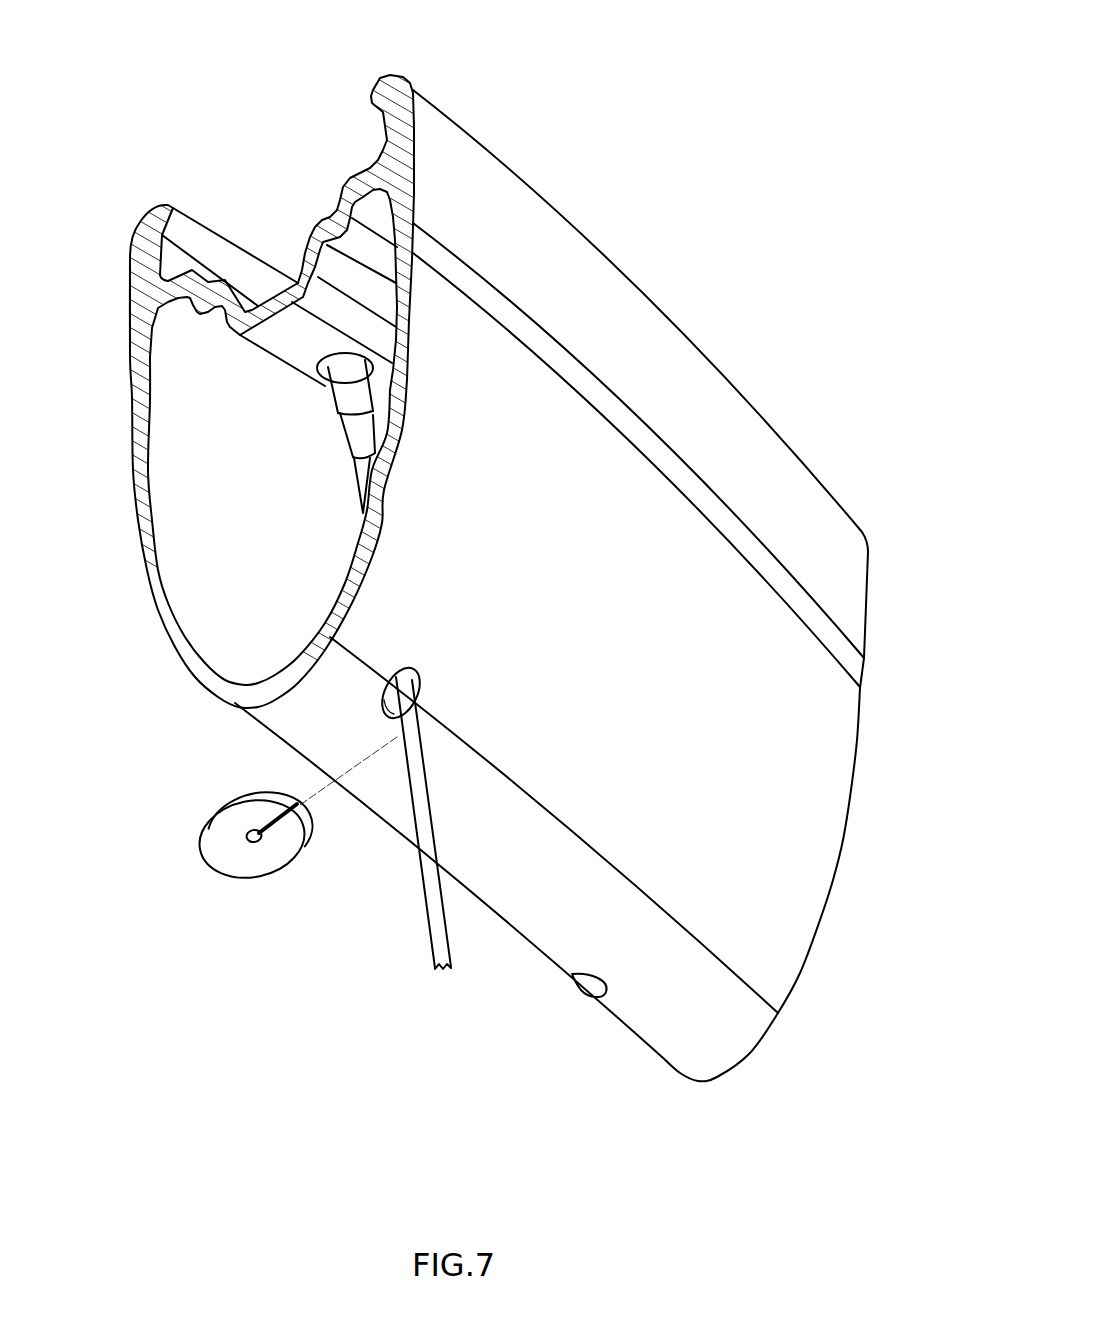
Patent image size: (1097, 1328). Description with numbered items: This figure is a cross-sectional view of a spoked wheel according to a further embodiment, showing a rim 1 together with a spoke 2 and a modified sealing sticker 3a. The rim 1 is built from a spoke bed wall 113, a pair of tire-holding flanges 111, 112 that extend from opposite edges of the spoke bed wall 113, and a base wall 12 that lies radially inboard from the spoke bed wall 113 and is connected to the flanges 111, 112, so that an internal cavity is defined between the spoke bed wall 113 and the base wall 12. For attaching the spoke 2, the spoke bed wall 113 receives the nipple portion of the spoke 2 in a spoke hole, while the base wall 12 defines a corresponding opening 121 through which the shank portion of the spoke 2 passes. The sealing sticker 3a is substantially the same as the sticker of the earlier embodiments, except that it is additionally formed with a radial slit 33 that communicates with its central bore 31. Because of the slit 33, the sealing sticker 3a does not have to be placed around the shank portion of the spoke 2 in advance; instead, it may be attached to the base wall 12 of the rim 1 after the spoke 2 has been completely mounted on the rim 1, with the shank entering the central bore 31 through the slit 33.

The rim 1 is at (258, 140).
The tire-holding flange 111 is at (150, 274).
The tire-holding flange 112 is at (400, 138).
The spoke bed wall 113 is at (256, 315).
The base wall 12 is at (163, 607).
The opening 121 is at (387, 710).
The spoke 2 is at (338, 433).
The sealing sticker 3a is at (203, 858).
The central bore 31 is at (261, 845).
The slit 33 is at (307, 830).